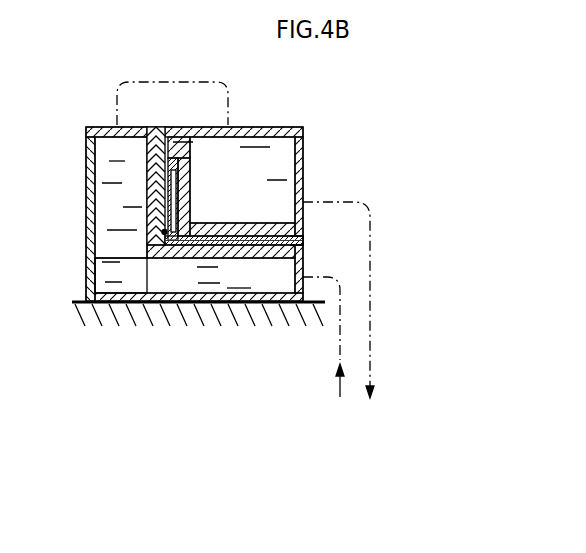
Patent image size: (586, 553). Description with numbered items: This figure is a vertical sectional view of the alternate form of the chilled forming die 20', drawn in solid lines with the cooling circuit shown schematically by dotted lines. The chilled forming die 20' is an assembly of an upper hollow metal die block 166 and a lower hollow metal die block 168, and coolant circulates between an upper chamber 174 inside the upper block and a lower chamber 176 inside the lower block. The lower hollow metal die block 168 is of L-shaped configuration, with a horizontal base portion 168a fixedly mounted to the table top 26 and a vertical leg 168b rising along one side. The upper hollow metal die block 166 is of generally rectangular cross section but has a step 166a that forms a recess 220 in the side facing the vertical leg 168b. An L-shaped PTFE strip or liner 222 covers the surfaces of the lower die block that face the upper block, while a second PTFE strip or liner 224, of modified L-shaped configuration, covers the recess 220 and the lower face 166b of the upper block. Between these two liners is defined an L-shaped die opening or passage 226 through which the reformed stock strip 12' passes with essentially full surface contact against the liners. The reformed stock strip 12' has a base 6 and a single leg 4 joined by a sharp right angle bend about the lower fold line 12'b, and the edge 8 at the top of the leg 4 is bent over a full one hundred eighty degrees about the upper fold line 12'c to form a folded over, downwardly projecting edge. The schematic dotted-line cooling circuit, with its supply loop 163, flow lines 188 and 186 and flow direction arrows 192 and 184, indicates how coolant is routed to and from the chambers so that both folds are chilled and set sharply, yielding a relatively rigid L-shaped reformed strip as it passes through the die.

The chilled forming die 20' is at (225, 197).
The fluid supply path 163 is at (184, 80).
The upper hollow metal die block 166 is at (252, 125).
The lower hollow metal die block 168 is at (110, 305).
The horizontal base portion 168a is at (192, 306).
The vertical leg 168b is at (150, 219).
The table top 26 is at (254, 306).
The leg 4 is at (163, 203).
The fold line 12'c is at (200, 186).
The edge 8 is at (192, 202).
The recess 220 is at (192, 218).
The die opening 226 is at (162, 232).
The upper chamber 174 is at (280, 164).
The step 166a is at (230, 161).
The second PTFE strip 224 is at (253, 225).
The PTFE strip 222 is at (304, 247).
The lower face 166b is at (303, 238).
The base 6 is at (257, 260).
The reformed stock strip 12' is at (195, 275).
The fold line 12'b is at (129, 272).
The lower chamber 176 is at (241, 280).
The flow path 188 is at (371, 247).
The flow direction 192 is at (372, 395).
The return path 186 is at (338, 347).
The return direction 184 is at (337, 376).